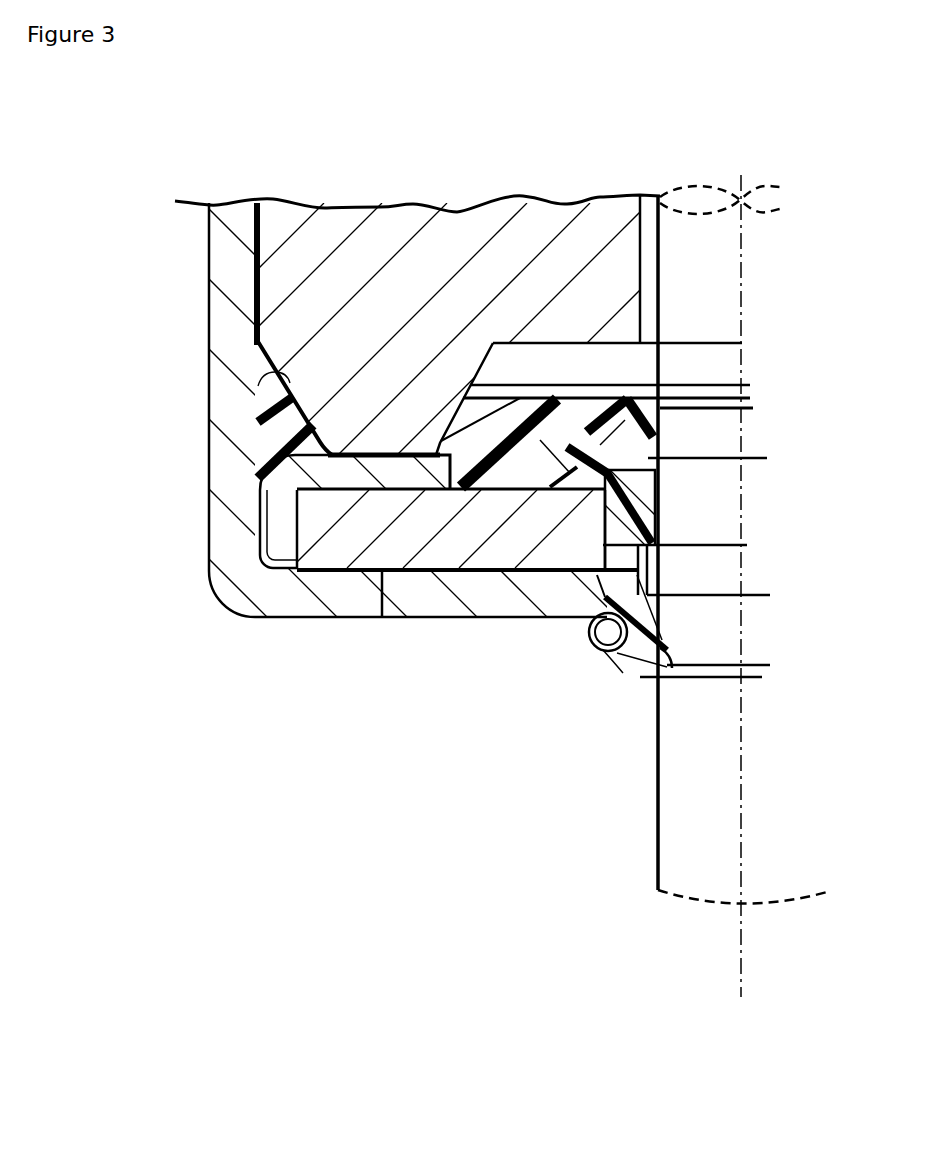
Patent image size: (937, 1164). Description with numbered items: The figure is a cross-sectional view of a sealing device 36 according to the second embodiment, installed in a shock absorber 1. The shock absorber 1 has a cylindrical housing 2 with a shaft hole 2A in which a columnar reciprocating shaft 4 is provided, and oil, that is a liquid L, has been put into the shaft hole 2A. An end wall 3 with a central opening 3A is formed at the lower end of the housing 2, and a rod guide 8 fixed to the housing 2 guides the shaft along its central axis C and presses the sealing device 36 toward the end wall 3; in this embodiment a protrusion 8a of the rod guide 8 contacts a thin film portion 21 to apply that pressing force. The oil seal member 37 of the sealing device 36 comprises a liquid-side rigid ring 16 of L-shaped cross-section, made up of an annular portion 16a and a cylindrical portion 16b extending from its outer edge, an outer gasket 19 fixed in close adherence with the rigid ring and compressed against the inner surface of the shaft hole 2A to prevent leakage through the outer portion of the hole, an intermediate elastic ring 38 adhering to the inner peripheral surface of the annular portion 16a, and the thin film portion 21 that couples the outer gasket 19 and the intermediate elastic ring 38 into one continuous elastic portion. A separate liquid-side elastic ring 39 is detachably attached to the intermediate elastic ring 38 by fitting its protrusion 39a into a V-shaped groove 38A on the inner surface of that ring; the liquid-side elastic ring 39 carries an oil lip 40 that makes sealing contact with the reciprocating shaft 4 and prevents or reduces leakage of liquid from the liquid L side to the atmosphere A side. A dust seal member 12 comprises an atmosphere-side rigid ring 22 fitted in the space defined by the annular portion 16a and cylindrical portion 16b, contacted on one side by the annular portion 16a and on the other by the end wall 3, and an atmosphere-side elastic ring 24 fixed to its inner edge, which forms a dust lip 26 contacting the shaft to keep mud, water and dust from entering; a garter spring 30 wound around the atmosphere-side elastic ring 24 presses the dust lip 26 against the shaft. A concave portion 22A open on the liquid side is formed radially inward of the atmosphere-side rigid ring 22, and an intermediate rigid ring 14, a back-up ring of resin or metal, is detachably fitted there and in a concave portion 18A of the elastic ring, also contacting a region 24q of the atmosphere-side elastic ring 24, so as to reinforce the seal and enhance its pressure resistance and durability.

The shock absorber 1 is at (232, 673).
The housing 2 is at (211, 317).
The shaft hole 2A is at (262, 298).
The end wall 3 is at (347, 610).
The opening 3A is at (387, 607).
The reciprocating shaft 4 is at (655, 888).
The rod guide 8 is at (467, 228).
The protrusion 8a is at (513, 358).
The dust seal member 12 is at (328, 568).
The intermediate rigid ring 14 is at (660, 490).
The liquid-side rigid ring 16 is at (260, 487).
The annular portion 16a is at (410, 452).
The cylindrical portion 16b is at (263, 527).
The concave portion 18A is at (660, 463).
The outer gasket 19 is at (258, 433).
The thin film portion 21 is at (373, 452).
The atmosphere-side rigid ring 22 is at (460, 573).
The concave portion 22A is at (653, 523).
The atmosphere-side elastic ring 24 is at (607, 663).
The region 24q is at (650, 560).
The dust lip 26 is at (668, 647).
The garter spring 30 is at (582, 641).
The sealing device 36 is at (224, 545).
The oil seal member 37 is at (258, 400).
The intermediate elastic ring 38 is at (586, 402).
The V-shaped groove 38A is at (660, 447).
The liquid-side elastic ring 39 is at (640, 403).
The protrusion 39a is at (550, 445).
The oil lip 40 is at (667, 408).
The liquid L is at (565, 160).
The atmosphere side A is at (570, 990).
The central axis C is at (742, 745).